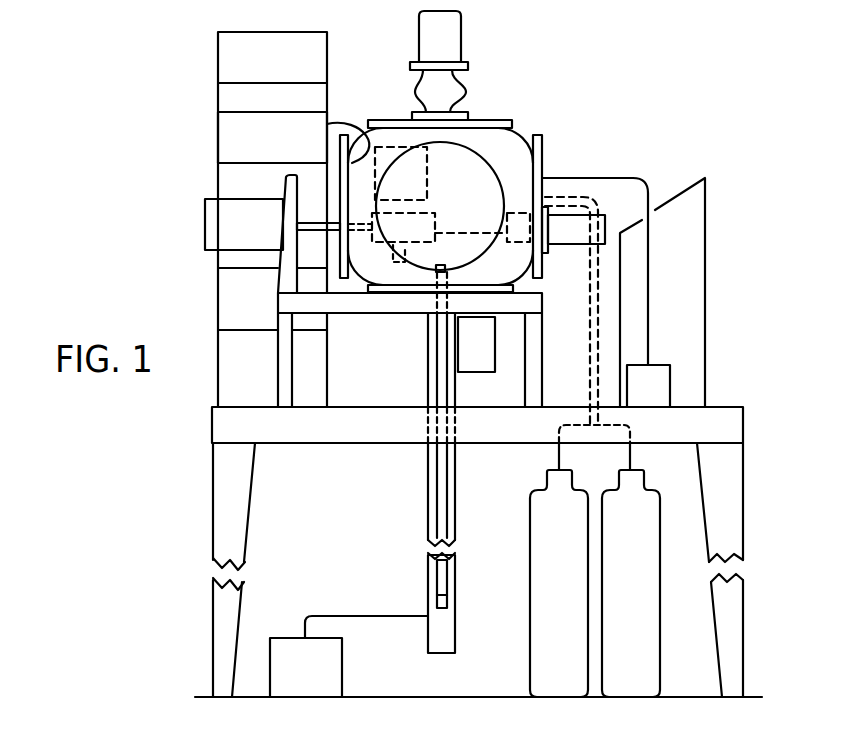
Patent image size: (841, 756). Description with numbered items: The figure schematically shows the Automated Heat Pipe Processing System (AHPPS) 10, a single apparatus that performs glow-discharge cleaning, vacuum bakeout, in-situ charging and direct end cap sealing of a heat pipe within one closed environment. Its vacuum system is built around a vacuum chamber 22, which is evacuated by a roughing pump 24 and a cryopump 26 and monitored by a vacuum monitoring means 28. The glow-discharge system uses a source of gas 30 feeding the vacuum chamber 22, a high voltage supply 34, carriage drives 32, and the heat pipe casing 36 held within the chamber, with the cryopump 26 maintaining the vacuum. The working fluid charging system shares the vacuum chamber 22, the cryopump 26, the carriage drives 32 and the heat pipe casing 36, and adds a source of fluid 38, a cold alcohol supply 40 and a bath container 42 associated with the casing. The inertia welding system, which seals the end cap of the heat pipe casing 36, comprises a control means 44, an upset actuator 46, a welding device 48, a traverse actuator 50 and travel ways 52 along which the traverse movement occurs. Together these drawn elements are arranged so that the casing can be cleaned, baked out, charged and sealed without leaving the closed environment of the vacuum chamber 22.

The Automated Heat Pipe Processing System (AHPPS) 10 is at (637, 108).
The vacuum chamber 22 is at (530, 116).
The roughing pump 24 is at (670, 380).
The cryopump 26 is at (461, 44).
The vacuum monitoring means 28 is at (218, 100).
The source of gas 30 is at (571, 586).
The carriage drives 32 is at (605, 222).
The high voltage supply 34 is at (218, 148).
The heat pipe casing 36 is at (428, 478).
The source of fluid 38 is at (643, 586).
The cold alcohol supply 40 is at (342, 670).
The bath container 42 is at (428, 535).
The control means 44 is at (705, 282).
The upset actuator 46 is at (495, 340).
The welding device 48 is at (427, 192).
The traverse actuator 50 is at (205, 228).
The travel ways 52 is at (448, 233).